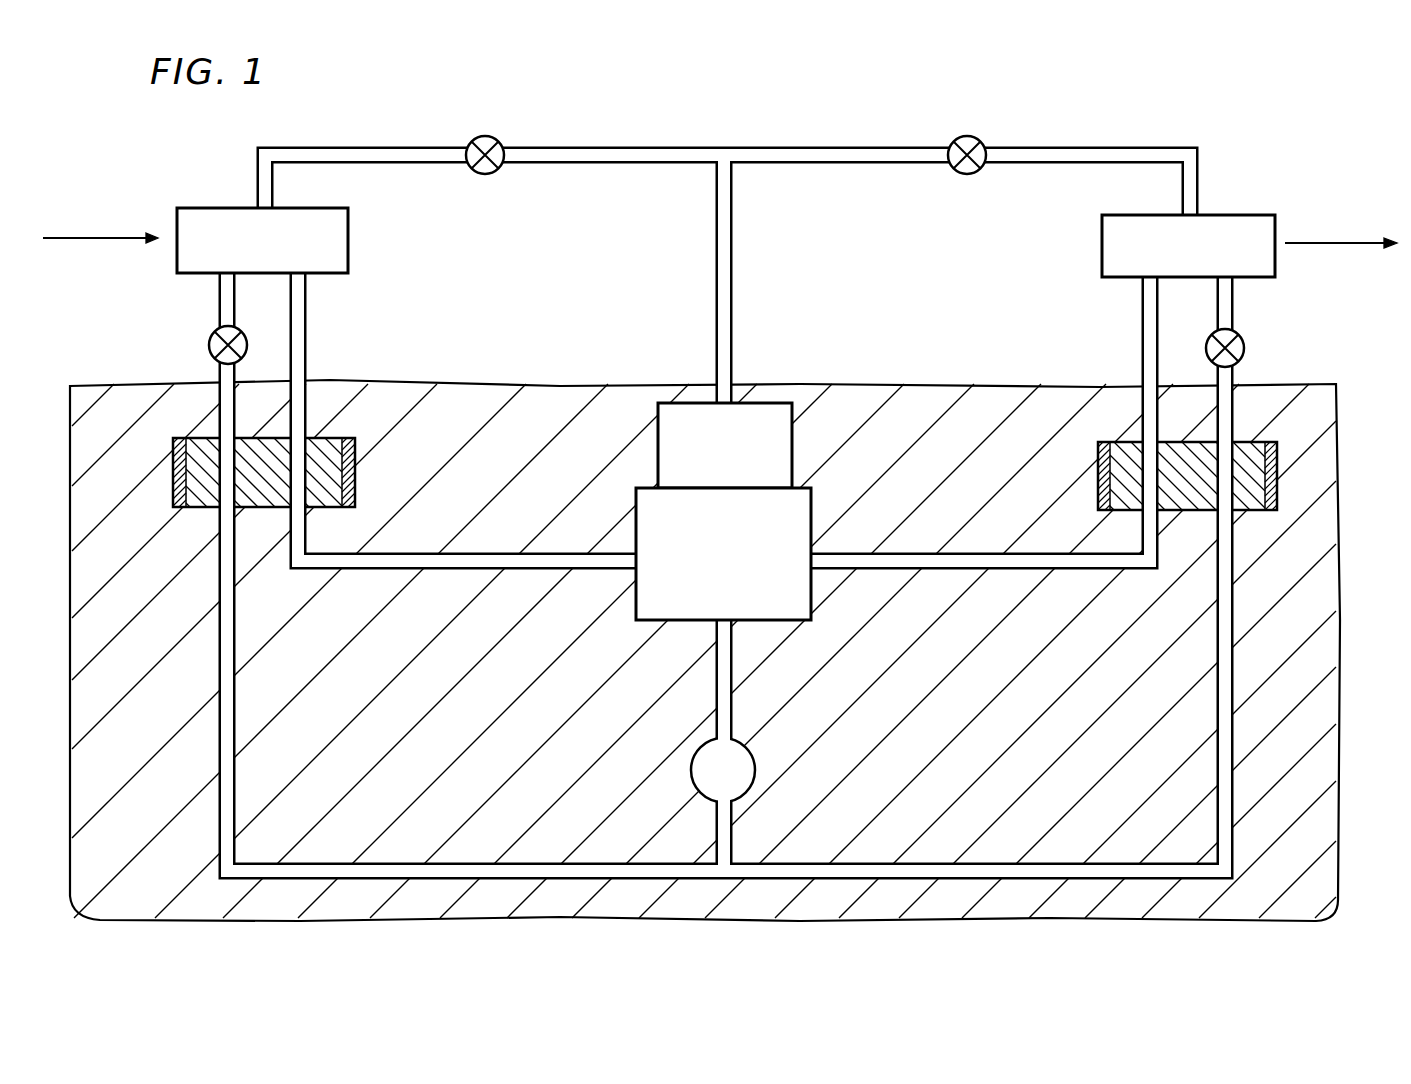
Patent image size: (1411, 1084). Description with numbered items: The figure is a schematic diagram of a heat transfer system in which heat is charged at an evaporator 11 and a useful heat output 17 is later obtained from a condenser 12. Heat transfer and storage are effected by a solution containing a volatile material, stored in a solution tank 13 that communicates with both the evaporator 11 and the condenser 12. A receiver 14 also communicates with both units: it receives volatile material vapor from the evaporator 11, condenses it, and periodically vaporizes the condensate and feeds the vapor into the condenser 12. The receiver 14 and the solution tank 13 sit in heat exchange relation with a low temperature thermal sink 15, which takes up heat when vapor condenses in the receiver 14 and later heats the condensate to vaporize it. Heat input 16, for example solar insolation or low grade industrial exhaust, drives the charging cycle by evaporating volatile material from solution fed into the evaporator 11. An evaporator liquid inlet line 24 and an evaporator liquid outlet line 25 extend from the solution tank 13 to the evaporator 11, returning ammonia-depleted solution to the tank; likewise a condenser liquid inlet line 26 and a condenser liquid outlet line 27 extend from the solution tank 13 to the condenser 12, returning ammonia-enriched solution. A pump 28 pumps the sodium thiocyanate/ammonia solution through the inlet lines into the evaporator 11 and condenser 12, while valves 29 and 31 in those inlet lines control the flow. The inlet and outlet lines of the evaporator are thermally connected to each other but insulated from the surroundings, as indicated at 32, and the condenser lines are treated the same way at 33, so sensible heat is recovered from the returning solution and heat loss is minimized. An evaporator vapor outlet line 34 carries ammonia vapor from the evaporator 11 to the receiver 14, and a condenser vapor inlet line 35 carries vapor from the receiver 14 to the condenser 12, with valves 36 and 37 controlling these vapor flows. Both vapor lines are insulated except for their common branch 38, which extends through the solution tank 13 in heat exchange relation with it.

The evaporator 11 is at (340, 263).
The condenser 12 is at (1102, 244).
The solution tank 13 is at (785, 612).
The receiver 14 is at (765, 405).
The low temperature thermal sink 15 is at (422, 704).
The heat input 16 is at (45, 238).
The heat output 17 is at (1365, 240).
The evaporator liquid inlet line 24 is at (220, 702).
The evaporator liquid outlet line 25 is at (300, 330).
The condenser liquid inlet line 26 is at (1222, 727).
The condenser liquid outlet line 27 is at (1148, 335).
The pump 28 is at (742, 780).
The valve 29 is at (208, 347).
The valve 31 is at (1245, 345).
The insulation 32 is at (173, 470).
The insulation 33 is at (1277, 498).
The evaporator vapor outlet line 34 is at (617, 140).
The condenser vapor inlet line 35 is at (903, 140).
The valve 36 is at (490, 137).
The valve 37 is at (978, 138).
The common branch 38 is at (732, 252).